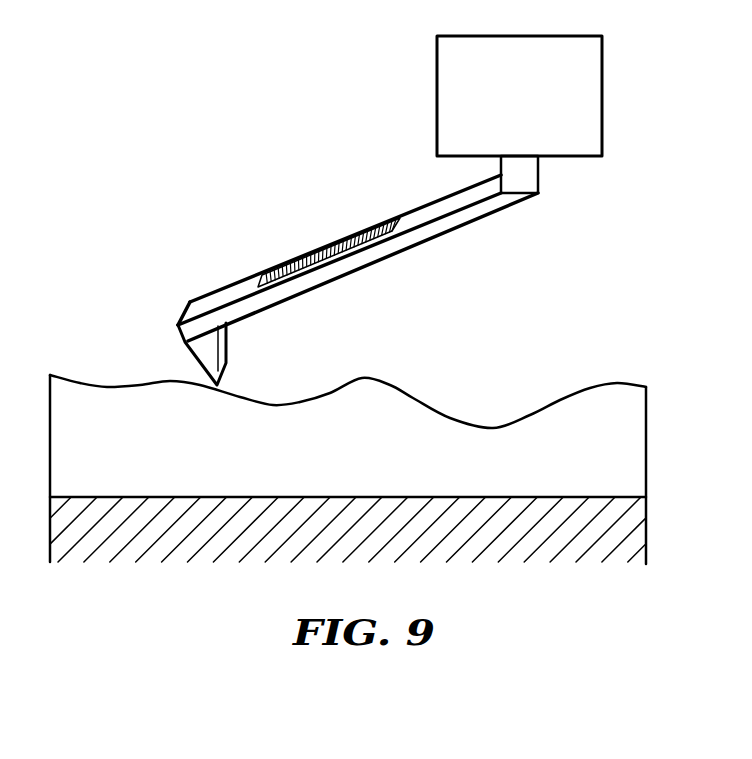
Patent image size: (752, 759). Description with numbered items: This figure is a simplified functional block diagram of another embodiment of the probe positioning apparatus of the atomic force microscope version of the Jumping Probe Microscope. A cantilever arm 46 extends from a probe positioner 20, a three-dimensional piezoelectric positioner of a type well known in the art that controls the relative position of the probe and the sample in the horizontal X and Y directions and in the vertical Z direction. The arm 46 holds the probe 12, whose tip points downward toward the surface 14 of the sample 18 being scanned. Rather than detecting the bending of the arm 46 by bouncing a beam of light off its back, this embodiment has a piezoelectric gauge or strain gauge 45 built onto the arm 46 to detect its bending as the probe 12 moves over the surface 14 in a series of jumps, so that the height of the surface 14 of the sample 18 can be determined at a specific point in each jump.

The probe 12 is at (202, 348).
The surface 14 is at (270, 403).
The sample 18 is at (404, 465).
The probe positioner 20 is at (593, 92).
The piezoelectric gauge or strain gauge 45 is at (293, 261).
The arm 46 is at (203, 296).